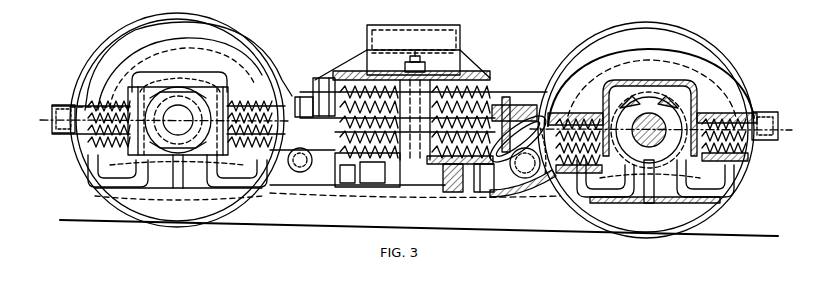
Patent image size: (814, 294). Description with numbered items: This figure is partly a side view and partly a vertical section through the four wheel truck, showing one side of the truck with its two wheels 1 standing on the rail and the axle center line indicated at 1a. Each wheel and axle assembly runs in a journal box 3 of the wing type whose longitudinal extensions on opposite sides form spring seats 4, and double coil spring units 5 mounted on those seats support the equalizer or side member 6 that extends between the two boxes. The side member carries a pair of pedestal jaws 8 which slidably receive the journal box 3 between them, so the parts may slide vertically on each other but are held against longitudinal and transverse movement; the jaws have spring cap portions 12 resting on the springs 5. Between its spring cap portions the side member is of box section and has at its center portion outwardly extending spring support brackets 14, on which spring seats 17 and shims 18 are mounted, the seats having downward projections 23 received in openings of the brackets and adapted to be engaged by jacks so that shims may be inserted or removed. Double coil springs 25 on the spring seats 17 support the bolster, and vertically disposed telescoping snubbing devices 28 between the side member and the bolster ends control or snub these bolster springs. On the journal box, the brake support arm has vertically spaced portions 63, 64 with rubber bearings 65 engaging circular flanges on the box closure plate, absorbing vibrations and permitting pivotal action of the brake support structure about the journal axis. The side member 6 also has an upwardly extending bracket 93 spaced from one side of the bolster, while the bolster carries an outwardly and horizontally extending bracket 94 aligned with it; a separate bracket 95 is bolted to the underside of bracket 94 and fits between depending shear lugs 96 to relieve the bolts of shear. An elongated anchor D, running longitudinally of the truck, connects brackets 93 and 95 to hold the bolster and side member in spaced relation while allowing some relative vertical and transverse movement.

The wheels 1 is at (236, 212).
The axle 1a is at (46, 113).
The journal boxes 3 is at (186, 90).
The spring seats 4 is at (110, 173).
The double coil spring units 5 is at (88, 144).
The side members 6 is at (508, 200).
The pedestal jaws 8 is at (602, 100).
The spring cap portions 12 is at (598, 112).
The spring support brackets 14 is at (484, 188).
The spring seats 17 is at (456, 186).
The shims 18 is at (496, 185).
The downward projections 23 is at (350, 188).
The double coil springs 25 is at (502, 93).
The telescoping snubbing devices 28 is at (400, 95).
The vertically spaced portion of arm 63 is at (164, 60).
The vertically spaced portion of arm 64 is at (155, 183).
The rubber bearings 65 is at (165, 172).
The upwardly extending bracket 93 is at (508, 100).
The bolster bracket 94 is at (330, 80).
The separate bracket 95 is at (338, 122).
The depending shear lug 96 is at (305, 80).
The elongated anchors D is at (303, 92).